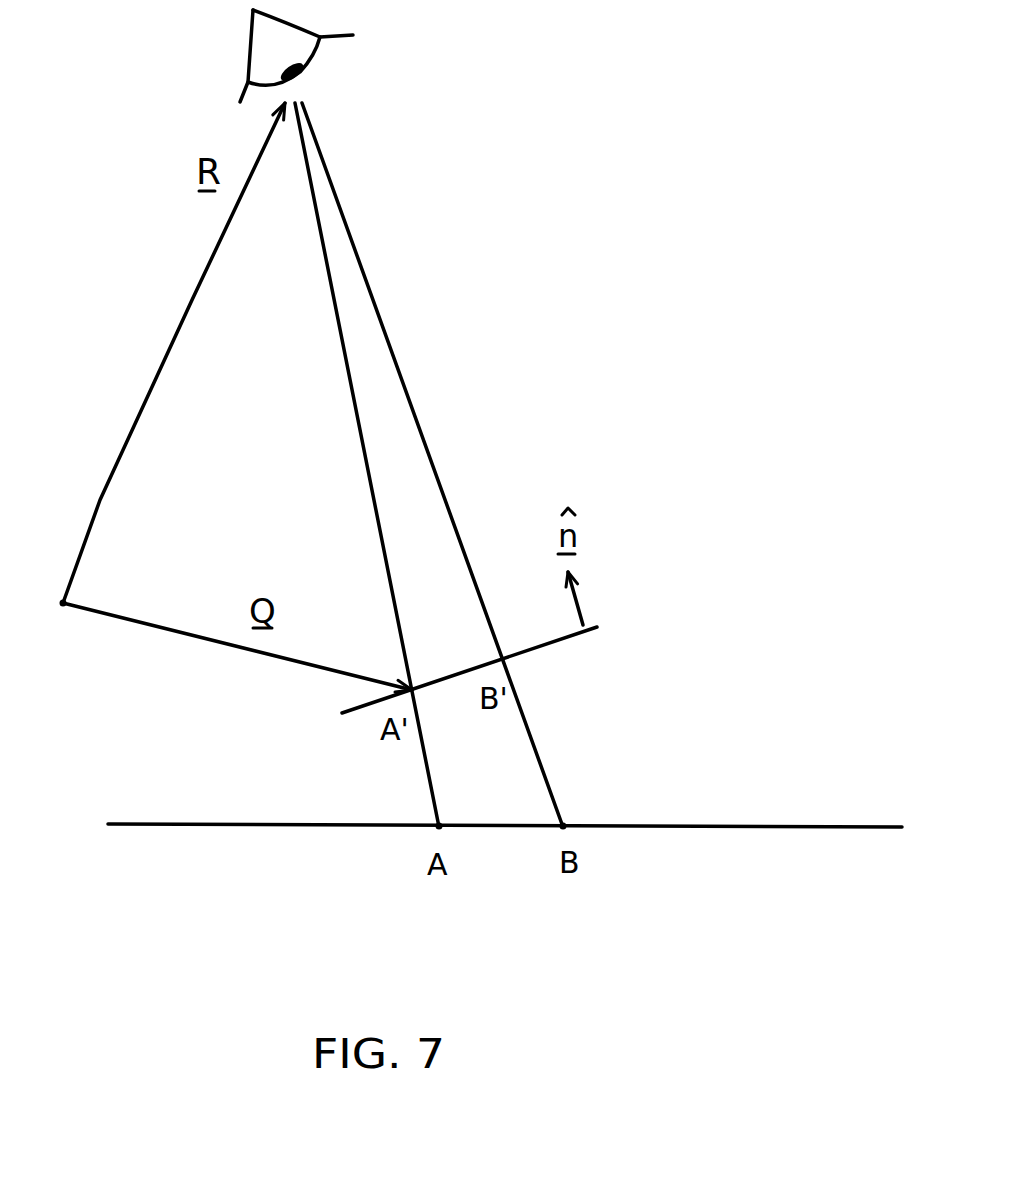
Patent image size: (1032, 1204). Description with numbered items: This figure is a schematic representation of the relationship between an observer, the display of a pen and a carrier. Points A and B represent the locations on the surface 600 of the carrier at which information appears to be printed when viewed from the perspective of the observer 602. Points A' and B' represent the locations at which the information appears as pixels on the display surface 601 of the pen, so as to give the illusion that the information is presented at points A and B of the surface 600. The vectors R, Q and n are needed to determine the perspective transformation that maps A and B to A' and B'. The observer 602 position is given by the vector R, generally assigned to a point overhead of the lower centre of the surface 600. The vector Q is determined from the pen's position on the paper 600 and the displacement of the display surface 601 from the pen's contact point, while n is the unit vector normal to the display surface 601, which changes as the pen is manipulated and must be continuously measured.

The surface of a carrier 600 is at (778, 825).
The display surface 601 is at (543, 650).
The observer 602 is at (318, 65).